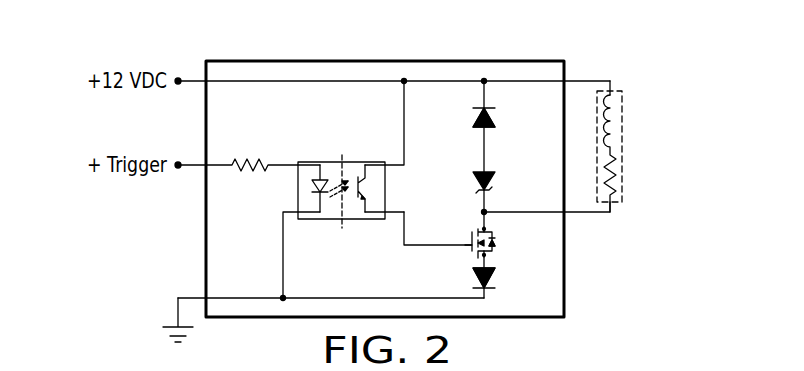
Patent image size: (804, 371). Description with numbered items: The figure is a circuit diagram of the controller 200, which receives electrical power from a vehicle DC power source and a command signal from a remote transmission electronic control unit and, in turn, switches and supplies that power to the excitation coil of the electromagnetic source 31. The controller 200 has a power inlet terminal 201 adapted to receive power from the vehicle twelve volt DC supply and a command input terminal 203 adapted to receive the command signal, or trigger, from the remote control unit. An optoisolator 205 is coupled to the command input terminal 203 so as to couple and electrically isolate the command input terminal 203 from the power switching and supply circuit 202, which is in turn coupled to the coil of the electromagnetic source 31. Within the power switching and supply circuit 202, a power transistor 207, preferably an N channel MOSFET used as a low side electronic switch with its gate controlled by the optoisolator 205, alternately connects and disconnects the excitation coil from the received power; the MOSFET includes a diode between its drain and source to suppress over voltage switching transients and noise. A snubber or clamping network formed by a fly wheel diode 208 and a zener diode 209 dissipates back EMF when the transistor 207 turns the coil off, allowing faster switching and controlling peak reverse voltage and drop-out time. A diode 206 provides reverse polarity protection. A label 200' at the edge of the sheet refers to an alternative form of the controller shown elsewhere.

The controller 200 is at (417, 168).
The power inlet terminal 201 is at (193, 81).
The power switching and supply circuit 202 is at (499, 145).
The command input terminal 203 is at (193, 165).
The optoisolator 205 is at (322, 160).
The diode 206 is at (475, 278).
The power transistor 207 is at (498, 241).
The fly wheel diode 208 is at (473, 118).
The zener diode 209 is at (492, 183).
The electromagnetic source 31 is at (626, 145).
The alternate ignition module circuit 200' is at (642, 360).